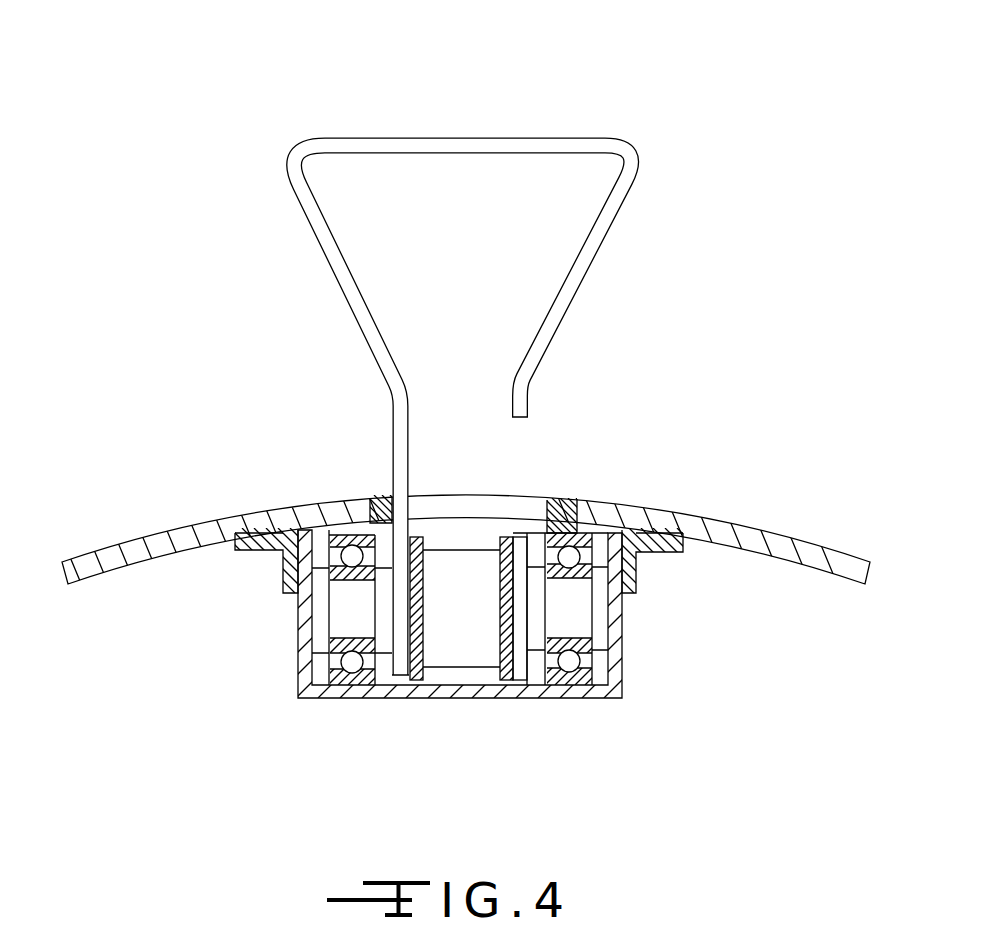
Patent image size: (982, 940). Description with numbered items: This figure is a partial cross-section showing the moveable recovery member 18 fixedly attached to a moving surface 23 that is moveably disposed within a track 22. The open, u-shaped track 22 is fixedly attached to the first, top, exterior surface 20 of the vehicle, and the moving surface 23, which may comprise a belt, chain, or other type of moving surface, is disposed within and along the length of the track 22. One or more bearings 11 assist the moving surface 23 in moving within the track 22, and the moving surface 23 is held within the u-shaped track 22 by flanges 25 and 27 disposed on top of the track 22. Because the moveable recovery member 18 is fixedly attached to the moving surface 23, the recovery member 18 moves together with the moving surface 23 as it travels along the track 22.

The bearings 11 is at (350, 605).
The moveable recovery member 18 is at (496, 137).
The first, top, exterior surface 20 is at (213, 520).
The u-shaped track 22 is at (623, 645).
The moving surface 23 is at (467, 577).
The flange 25 is at (348, 537).
The flange 27 is at (572, 537).